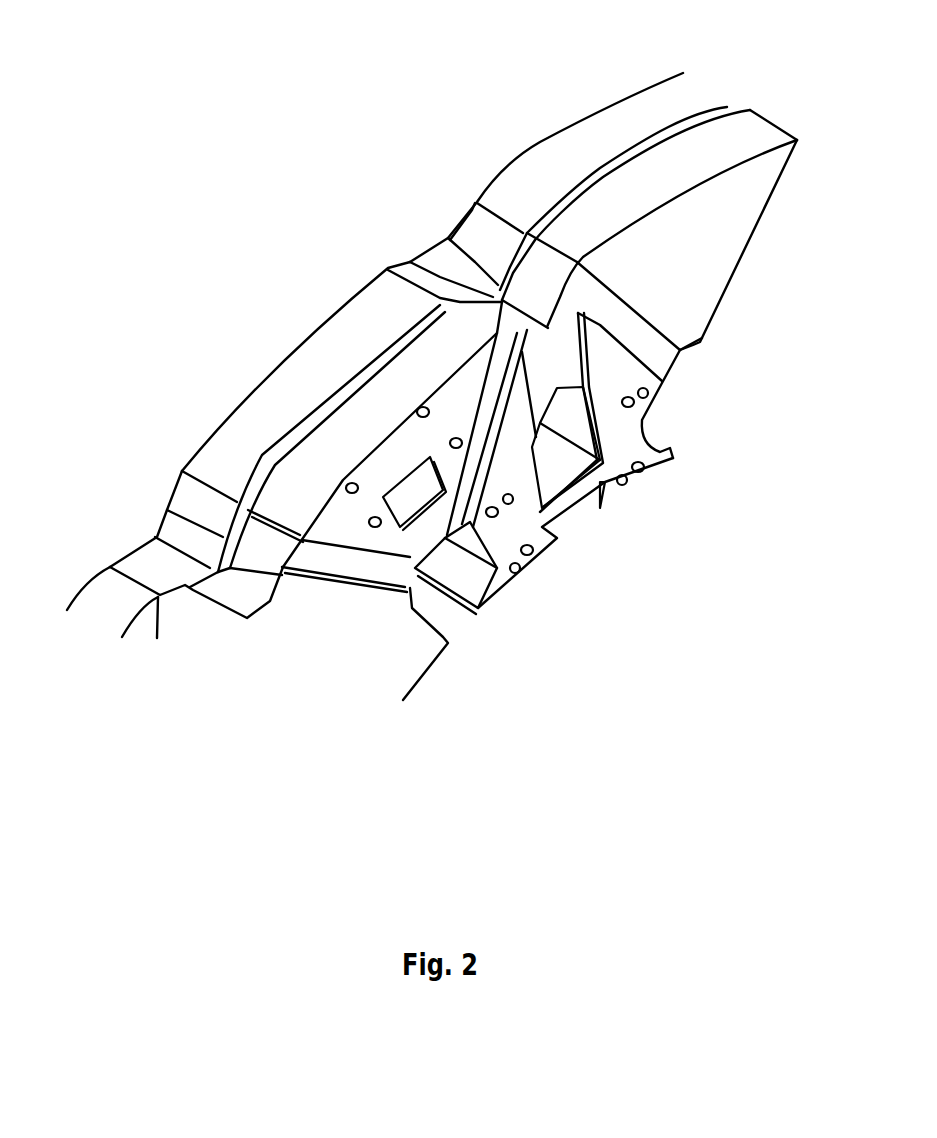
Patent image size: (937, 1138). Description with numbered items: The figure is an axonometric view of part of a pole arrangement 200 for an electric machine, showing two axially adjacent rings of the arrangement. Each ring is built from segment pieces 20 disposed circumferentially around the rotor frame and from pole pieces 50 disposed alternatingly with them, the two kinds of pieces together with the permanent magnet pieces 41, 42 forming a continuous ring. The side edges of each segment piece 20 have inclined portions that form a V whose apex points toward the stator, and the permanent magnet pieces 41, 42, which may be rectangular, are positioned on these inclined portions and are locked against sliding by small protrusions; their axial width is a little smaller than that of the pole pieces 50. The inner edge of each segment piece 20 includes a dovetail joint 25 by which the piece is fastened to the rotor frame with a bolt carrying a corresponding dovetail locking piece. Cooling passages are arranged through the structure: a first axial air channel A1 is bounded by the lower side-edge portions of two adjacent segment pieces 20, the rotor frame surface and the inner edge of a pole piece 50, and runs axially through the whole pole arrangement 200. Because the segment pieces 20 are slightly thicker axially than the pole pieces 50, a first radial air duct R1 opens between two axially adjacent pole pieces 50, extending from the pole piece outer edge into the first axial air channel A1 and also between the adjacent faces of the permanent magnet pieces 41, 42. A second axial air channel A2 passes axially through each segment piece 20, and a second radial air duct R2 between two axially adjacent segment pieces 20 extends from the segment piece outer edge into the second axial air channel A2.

The pole arrangement 200 is at (783, 83).
The pole piece 50 is at (360, 415).
The permanent magnet piece 41 is at (265, 545).
The permanent magnet piece 42 is at (480, 318).
The first radial air duct R1 is at (303, 428).
The second radial air duct R2 is at (497, 290).
The segment piece 20 is at (630, 438).
The dovetail joint 25 is at (580, 518).
The first axial air channel A1 is at (457, 617).
The second axial air channel A2 is at (562, 453).